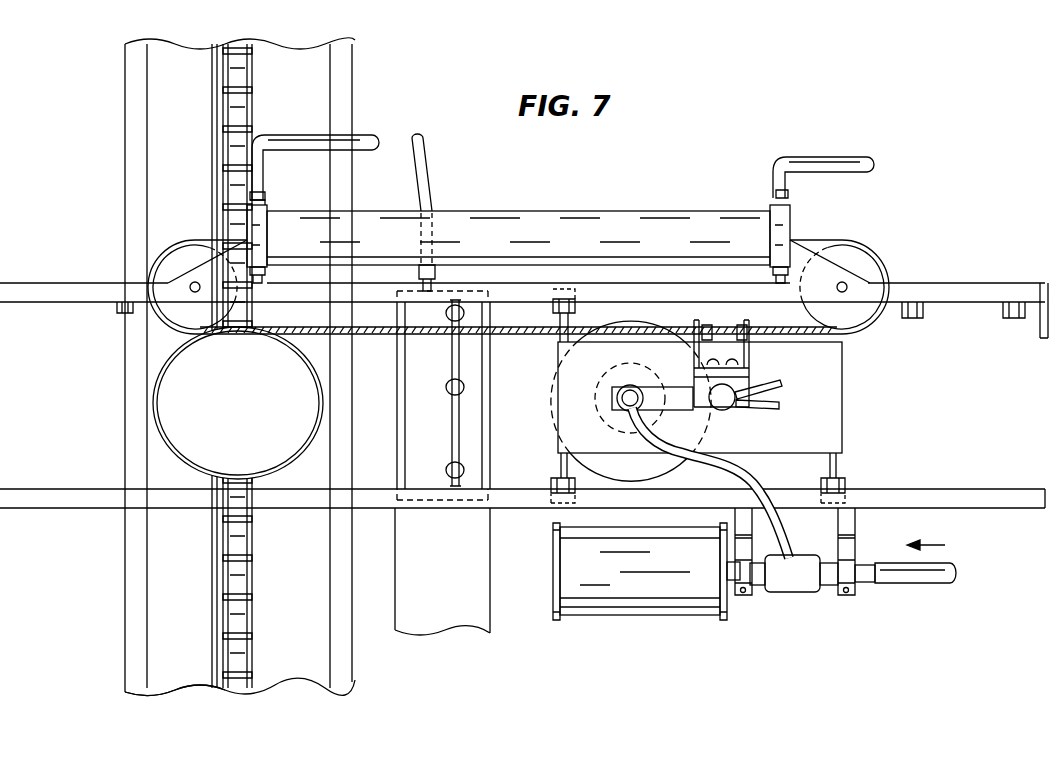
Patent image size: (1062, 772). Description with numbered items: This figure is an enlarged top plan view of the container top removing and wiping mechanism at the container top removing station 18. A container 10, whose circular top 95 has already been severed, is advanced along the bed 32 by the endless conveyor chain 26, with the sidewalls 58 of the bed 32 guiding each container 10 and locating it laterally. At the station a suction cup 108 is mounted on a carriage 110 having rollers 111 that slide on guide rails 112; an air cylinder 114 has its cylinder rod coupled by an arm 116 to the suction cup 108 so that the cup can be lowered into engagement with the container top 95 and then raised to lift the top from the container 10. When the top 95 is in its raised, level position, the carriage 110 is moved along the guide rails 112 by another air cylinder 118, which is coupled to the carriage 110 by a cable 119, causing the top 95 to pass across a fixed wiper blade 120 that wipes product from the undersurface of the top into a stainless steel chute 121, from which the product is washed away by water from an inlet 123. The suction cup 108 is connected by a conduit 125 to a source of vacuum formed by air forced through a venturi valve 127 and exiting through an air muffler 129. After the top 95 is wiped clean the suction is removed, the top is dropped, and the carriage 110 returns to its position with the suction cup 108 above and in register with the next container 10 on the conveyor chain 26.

The container top removing station 18 is at (560, 209).
The air cylinder 118 is at (686, 212).
The inlet 123 is at (427, 190).
The guide rails 112 is at (666, 300).
The rollers 111 is at (552, 307).
The cable 119 is at (678, 332).
The suction cup 108 is at (547, 392).
The container top 95 is at (547, 410).
The fixed wiper blade 120 is at (455, 402).
The arm 116 is at (688, 405).
The air cylinder 114 is at (722, 403).
The carriage 110 is at (843, 434).
The container 10 is at (172, 453).
The conduit 125 is at (753, 485).
The sidewalls 58 is at (135, 577).
The stainless steel chute 121 is at (483, 627).
The air muffler 129 is at (655, 598).
The venturi valve 127 is at (810, 587).
The bed 32 is at (185, 683).
The conveyor chain 26 is at (235, 667).